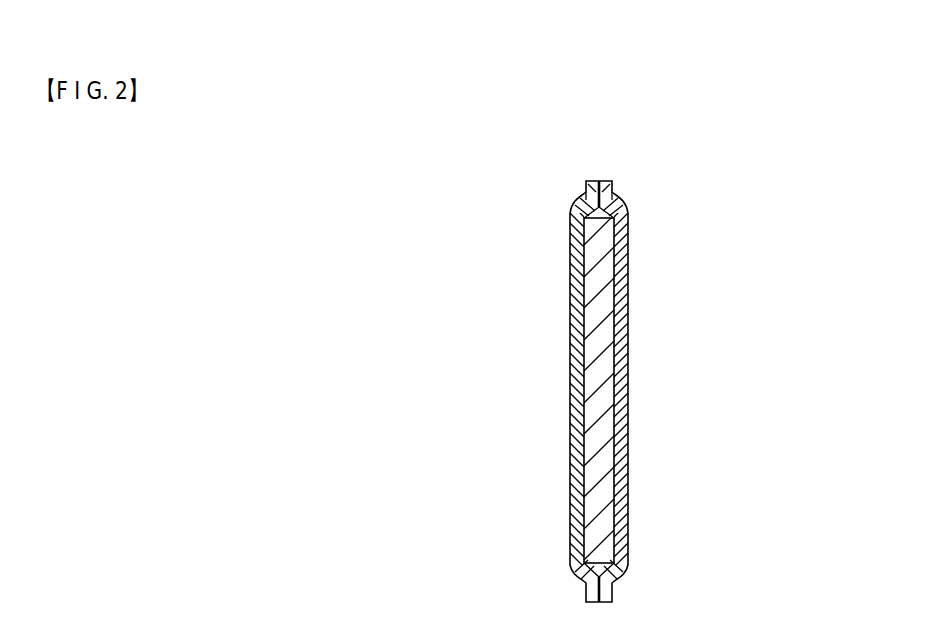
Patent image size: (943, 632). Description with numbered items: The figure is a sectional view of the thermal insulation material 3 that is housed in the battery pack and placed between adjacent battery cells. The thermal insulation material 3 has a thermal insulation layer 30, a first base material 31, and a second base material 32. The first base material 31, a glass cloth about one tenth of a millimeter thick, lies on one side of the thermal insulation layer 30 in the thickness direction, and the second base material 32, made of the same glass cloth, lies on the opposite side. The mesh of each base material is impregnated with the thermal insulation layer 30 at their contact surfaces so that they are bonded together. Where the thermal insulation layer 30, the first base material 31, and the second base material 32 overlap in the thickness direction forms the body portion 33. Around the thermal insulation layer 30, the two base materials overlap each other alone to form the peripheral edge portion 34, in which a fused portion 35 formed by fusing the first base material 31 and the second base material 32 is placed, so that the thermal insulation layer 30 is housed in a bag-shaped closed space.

The thermal insulation material 3 is at (699, 141).
The thermal insulation layer 30 is at (607, 323).
The first base material 31 is at (595, 183).
The second base material 32 is at (604, 183).
The body portion 33 is at (570, 340).
The peripheral edge portion 34 is at (586, 192).
The fused portion 35 is at (612, 197).